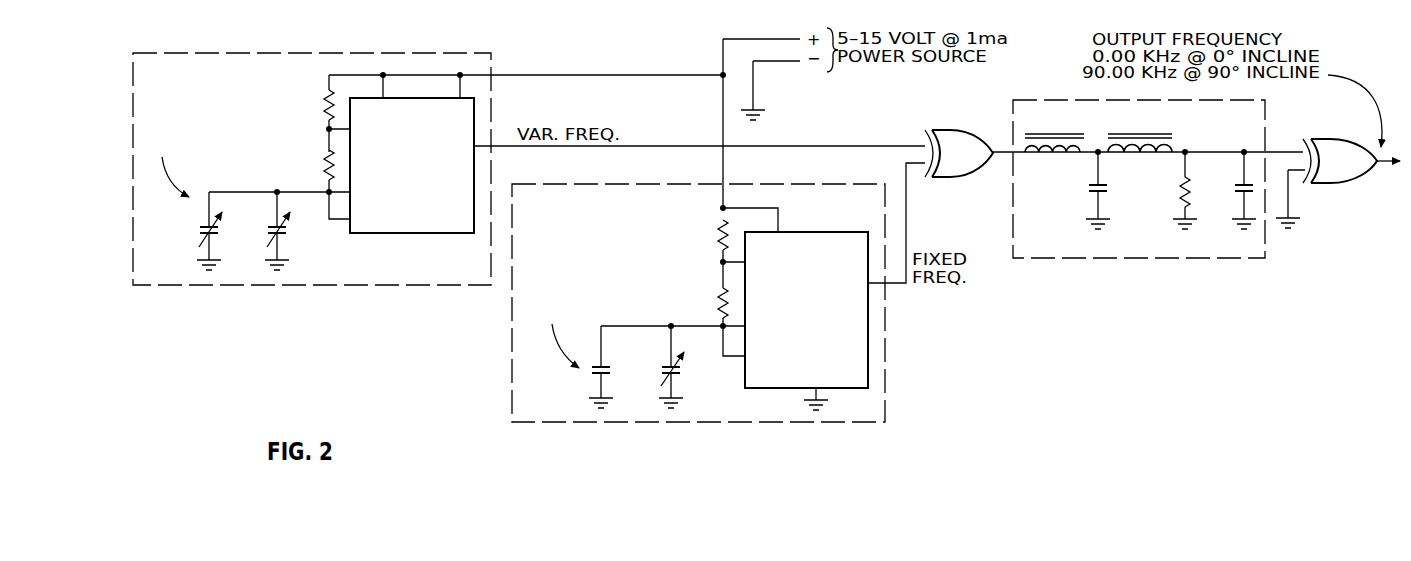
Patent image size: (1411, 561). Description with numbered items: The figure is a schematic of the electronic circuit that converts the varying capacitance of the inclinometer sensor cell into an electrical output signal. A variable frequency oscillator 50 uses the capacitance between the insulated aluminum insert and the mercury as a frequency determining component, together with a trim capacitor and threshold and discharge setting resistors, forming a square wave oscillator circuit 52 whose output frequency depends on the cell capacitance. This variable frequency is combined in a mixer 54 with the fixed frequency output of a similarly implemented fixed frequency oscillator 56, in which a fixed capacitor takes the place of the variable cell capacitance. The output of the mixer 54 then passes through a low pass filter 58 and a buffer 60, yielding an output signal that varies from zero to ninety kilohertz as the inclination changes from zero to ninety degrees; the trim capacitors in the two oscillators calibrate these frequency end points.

The variable frequency oscillator 50 is at (357, 311).
The square wave oscillator circuit 52 is at (437, 234).
The mixer 54 is at (955, 130).
The fixed frequency oscillator 56 is at (777, 448).
The low pass filter 58 is at (1232, 284).
The buffer 60 is at (1338, 139).